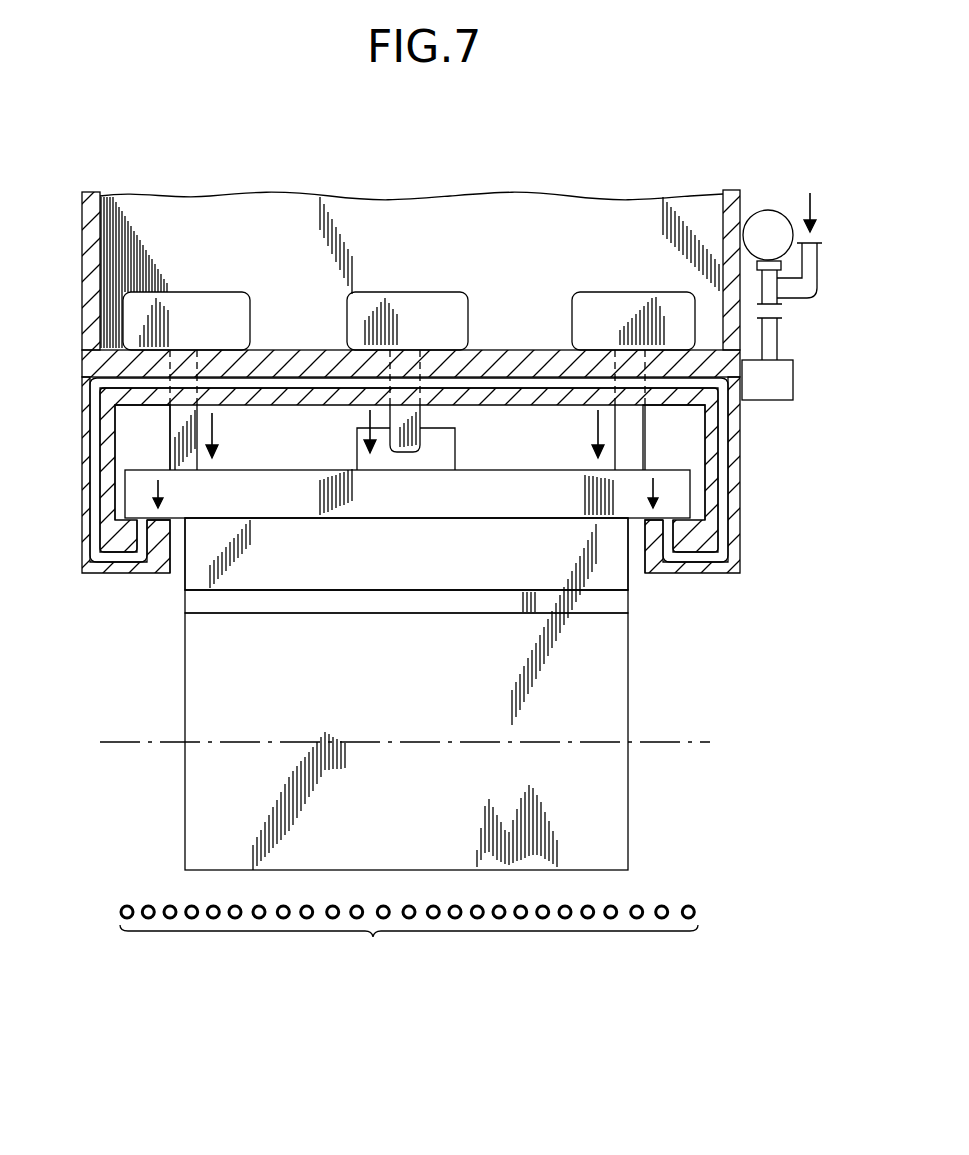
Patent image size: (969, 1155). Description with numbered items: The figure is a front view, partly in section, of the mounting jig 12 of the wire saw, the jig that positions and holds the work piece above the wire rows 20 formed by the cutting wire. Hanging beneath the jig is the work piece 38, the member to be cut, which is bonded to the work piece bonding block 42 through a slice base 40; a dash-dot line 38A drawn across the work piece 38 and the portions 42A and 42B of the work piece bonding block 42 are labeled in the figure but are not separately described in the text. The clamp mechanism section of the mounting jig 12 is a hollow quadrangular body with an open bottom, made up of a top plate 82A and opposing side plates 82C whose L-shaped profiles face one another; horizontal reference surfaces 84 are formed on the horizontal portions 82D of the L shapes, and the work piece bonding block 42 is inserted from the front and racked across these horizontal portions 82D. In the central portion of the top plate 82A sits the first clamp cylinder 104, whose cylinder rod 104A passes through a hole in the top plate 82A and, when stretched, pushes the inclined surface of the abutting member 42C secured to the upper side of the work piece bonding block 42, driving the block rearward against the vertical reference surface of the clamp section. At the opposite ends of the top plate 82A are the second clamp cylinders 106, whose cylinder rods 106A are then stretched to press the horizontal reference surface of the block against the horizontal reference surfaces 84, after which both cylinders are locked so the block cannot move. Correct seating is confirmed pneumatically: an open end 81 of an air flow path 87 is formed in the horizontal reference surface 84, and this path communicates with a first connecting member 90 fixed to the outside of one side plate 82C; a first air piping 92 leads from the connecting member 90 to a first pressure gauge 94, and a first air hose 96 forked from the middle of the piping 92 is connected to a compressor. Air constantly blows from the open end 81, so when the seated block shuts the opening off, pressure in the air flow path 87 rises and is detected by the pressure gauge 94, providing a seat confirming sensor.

The mounting jig 12 is at (775, 458).
The wire rows 20 is at (409, 950).
The work piece 38 is at (600, 827).
The center line of substrate 38A is at (688, 742).
The slice base 40 is at (497, 600).
The work piece bonding block 42 is at (265, 553).
The hanger beam 42A is at (492, 498).
The hanger upper body 42B is at (363, 568).
The abutting member 42C is at (437, 448).
The open end 81 is at (143, 516).
The top plate 82A is at (498, 365).
The side plates 82C is at (80, 508).
The horizontal portions 82D is at (127, 570).
The horizontal reference surface 84 is at (137, 523).
The air flow path 87 is at (285, 385).
The first connecting member 90 is at (778, 384).
The first air piping 92 is at (782, 330).
The first pressure gauge 94 is at (772, 212).
The first air hose 96 is at (823, 280).
The first clamp cylinder 104 is at (406, 312).
The cylinder rod 104A is at (420, 412).
The second clamp cylinders 106 is at (190, 315).
The cylinder rod 106A is at (200, 432).